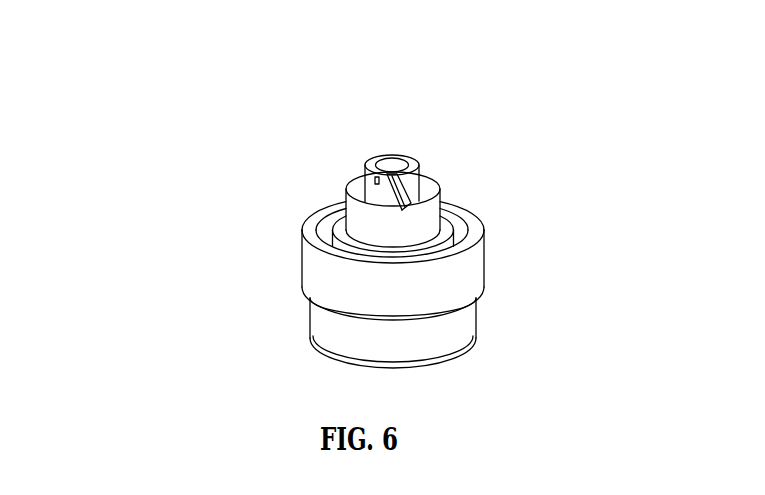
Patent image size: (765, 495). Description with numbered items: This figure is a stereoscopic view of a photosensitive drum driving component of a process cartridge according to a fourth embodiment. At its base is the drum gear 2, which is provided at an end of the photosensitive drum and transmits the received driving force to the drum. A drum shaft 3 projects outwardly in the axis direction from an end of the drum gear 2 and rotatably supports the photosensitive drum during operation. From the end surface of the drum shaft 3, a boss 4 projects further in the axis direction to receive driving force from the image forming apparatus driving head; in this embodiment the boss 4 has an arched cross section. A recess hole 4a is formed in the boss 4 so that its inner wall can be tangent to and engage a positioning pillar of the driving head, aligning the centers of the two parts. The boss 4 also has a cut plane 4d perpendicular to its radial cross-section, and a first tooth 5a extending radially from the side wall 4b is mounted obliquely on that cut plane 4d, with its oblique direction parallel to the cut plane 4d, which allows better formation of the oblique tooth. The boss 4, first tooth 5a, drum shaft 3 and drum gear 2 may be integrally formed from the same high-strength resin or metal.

The drum gear 2 is at (320, 278).
The drum shaft 3 is at (358, 220).
The boss 4 is at (418, 164).
The recess hole 4a is at (388, 163).
The side wall 4b is at (417, 181).
The cut plane 4d is at (407, 192).
The first tooth 5a is at (382, 182).